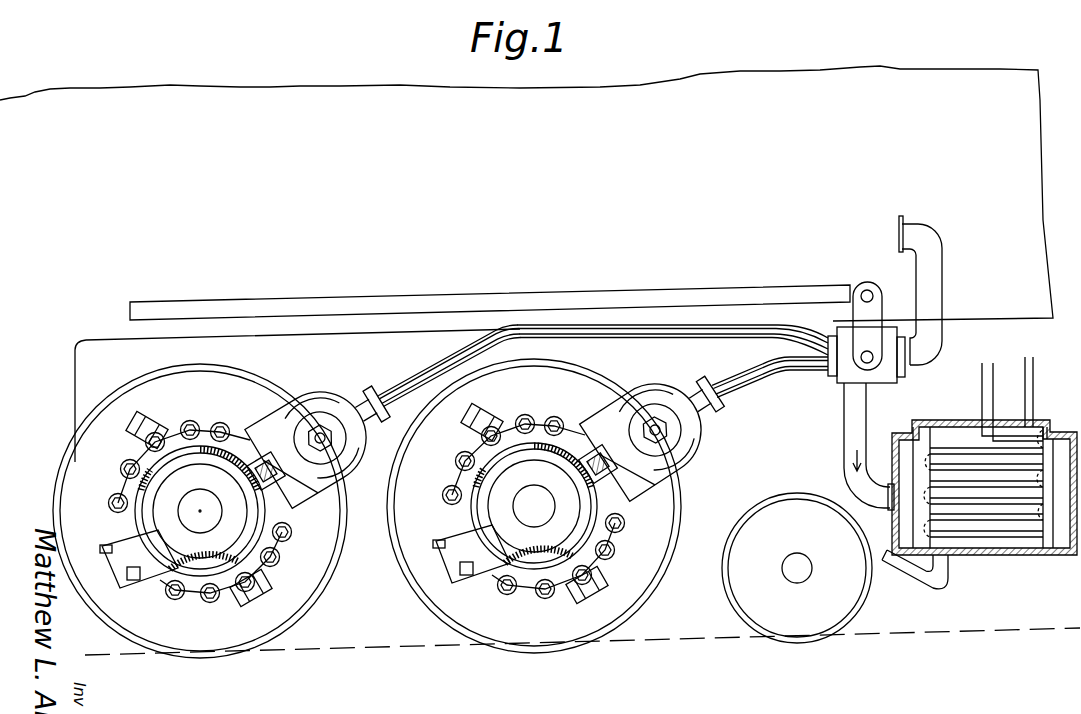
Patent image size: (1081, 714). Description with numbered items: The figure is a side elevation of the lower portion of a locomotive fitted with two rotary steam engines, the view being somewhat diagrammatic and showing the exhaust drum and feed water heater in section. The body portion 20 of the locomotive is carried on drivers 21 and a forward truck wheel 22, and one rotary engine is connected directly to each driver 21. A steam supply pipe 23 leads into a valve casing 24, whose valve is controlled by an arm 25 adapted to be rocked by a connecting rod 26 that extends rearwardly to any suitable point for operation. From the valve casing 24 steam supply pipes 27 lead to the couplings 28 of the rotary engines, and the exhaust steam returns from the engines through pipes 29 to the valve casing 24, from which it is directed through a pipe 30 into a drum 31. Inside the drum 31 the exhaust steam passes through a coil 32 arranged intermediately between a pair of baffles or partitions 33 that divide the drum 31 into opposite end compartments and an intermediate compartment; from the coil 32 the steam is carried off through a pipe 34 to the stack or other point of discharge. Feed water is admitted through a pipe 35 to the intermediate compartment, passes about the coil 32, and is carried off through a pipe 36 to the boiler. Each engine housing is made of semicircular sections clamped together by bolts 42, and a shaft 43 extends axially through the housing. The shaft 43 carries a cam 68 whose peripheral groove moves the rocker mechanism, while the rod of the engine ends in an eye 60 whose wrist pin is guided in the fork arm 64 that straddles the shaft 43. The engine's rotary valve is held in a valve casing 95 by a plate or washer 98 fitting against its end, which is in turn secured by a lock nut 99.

The body portion 20 is at (733, 80).
The drivers 21 is at (66, 489).
The forward truck wheel 22 is at (840, 600).
The steam supply pipe 23 is at (936, 290).
The valve casing 24 is at (884, 382).
The arm 25 is at (869, 314).
The connecting rod 26 is at (280, 304).
The steam supply pipes 27 is at (688, 330).
The couplings 28 is at (362, 396).
The pipes 29 is at (404, 382).
The pipe 30 is at (846, 448).
The drum 31 is at (1064, 552).
The coil 32 is at (1005, 542).
The baffles or partitions 33 is at (1062, 430).
The pipe 34 is at (985, 366).
The pipe 35 is at (1033, 374).
The pipe 36 is at (934, 589).
The bolts 42 is at (110, 545).
The shaft 43 is at (192, 523).
The eye 60 is at (254, 458).
The fork arm 64 is at (256, 515).
The cam 68 is at (240, 522).
The valve casing 95 is at (688, 452).
The plate or washer 98 is at (318, 418).
The lock nut 99 is at (336, 450).